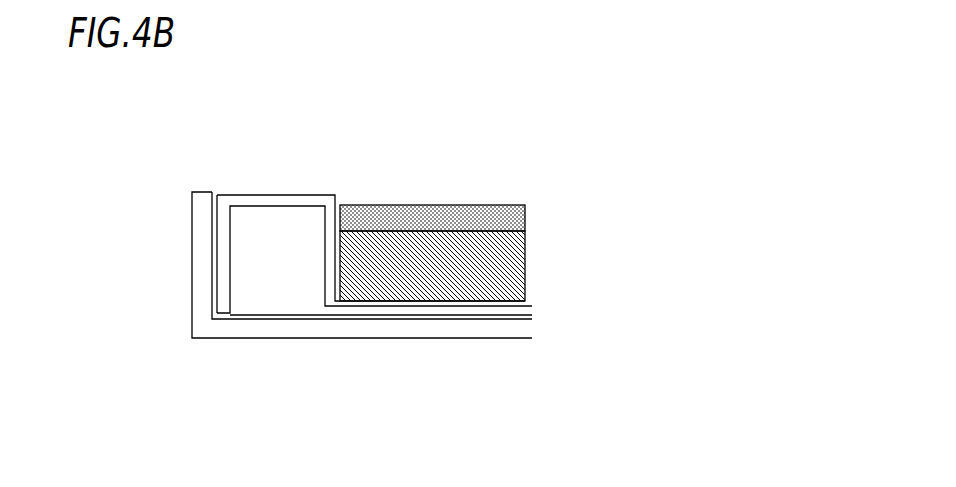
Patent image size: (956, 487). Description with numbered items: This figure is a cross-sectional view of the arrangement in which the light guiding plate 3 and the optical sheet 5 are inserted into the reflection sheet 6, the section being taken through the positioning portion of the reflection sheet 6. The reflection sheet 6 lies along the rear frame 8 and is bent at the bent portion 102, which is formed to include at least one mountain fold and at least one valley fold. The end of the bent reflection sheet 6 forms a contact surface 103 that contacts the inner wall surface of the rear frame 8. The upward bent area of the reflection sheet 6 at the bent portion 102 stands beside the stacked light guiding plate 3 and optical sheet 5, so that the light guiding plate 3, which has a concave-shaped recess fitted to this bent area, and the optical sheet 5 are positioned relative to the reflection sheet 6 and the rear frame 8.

The rear frame 8 is at (453, 323).
The reflection sheet 6 is at (345, 320).
The contact surface 103 is at (215, 262).
The bent portion 102 is at (215, 193).
The light guiding plate 3 is at (455, 256).
The optical sheet 5 is at (388, 220).